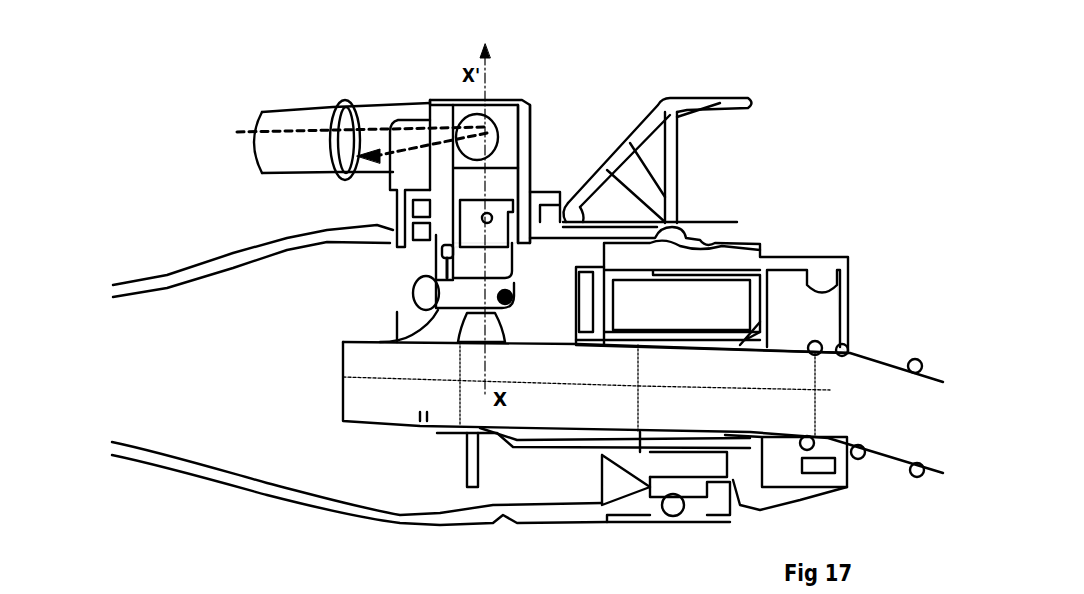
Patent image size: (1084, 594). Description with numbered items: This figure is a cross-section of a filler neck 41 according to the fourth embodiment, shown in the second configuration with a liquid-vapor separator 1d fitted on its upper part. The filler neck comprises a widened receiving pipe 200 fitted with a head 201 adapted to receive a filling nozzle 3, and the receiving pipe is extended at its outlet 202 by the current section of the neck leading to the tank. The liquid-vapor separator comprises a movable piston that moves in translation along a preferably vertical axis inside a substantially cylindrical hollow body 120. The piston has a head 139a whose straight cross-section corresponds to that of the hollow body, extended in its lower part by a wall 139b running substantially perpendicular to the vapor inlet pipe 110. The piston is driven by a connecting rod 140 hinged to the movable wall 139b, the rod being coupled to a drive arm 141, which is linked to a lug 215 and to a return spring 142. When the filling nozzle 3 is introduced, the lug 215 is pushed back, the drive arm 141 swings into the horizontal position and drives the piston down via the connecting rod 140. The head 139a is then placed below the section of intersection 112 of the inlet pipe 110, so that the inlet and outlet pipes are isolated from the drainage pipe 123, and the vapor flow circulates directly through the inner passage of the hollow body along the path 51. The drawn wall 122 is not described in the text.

The liquid-vapor separator 1d is at (412, 88).
The filling nozzle 3 is at (882, 373).
The filler neck 41 is at (757, 243).
The path 51 is at (302, 127).
The vapor inlet pipe 110 is at (248, 148).
The section of intersection 112 is at (485, 117).
The hollow body 120 is at (501, 157).
The housing wall 122 is at (533, 140).
The drainage pipe 123 is at (505, 245).
The piston head 139a is at (497, 190).
The wall 139b is at (467, 250).
The connecting rod 140 is at (490, 240).
The drive arm 141 is at (433, 268).
The return spring 142 is at (413, 297).
The receiving pipe 200 is at (302, 425).
The head 201 is at (840, 322).
The outlet 202 is at (138, 385).
The lug 215 is at (410, 330).